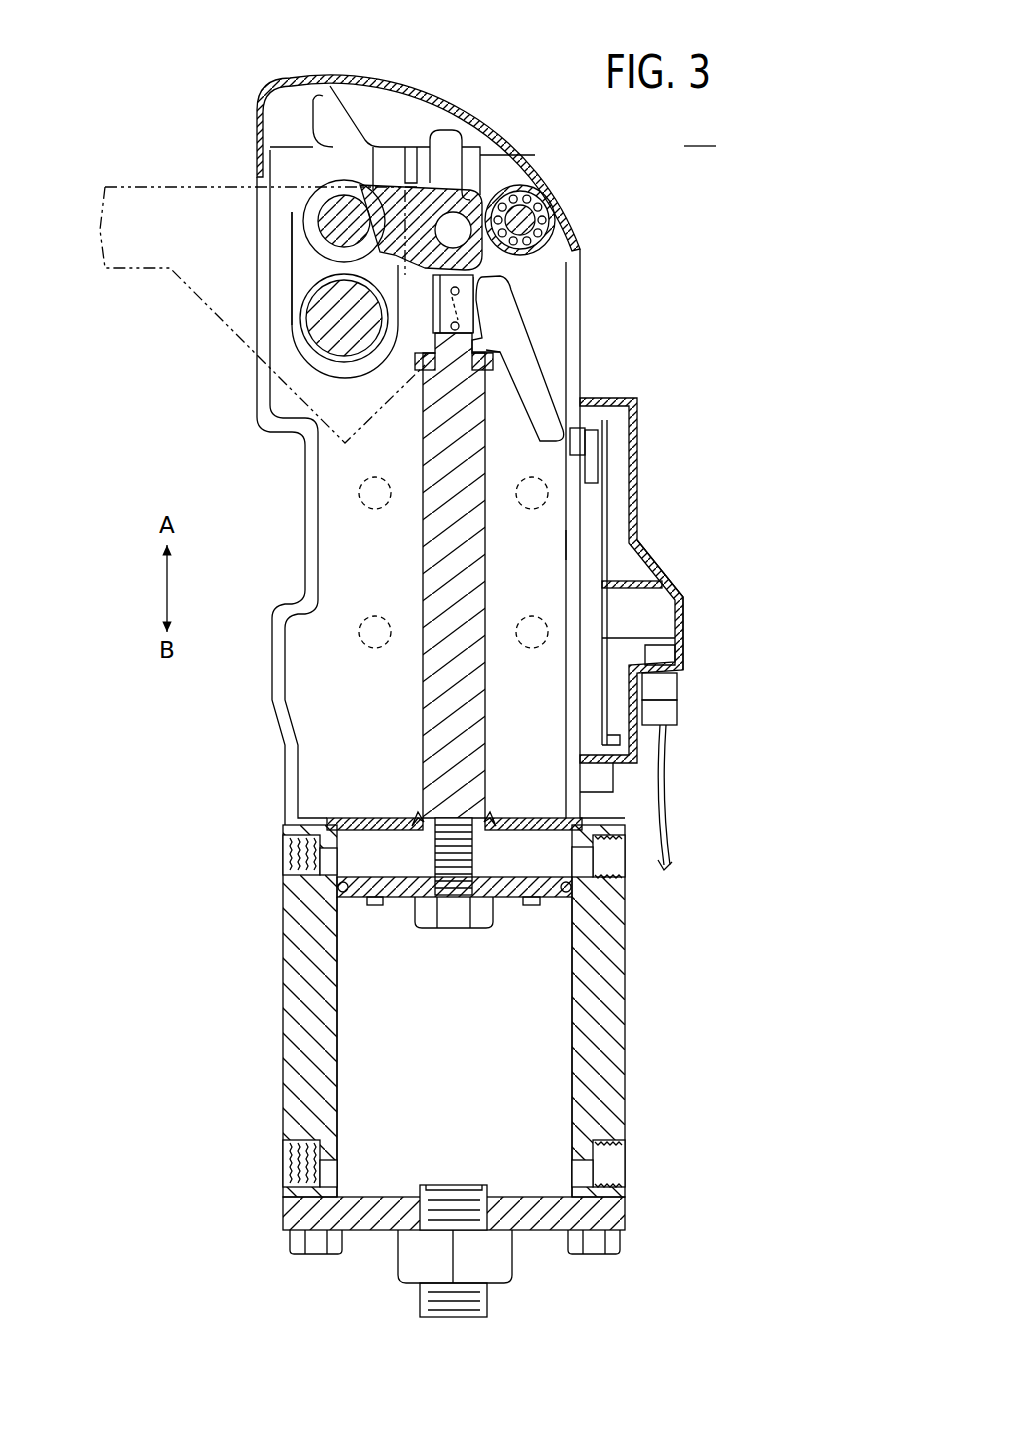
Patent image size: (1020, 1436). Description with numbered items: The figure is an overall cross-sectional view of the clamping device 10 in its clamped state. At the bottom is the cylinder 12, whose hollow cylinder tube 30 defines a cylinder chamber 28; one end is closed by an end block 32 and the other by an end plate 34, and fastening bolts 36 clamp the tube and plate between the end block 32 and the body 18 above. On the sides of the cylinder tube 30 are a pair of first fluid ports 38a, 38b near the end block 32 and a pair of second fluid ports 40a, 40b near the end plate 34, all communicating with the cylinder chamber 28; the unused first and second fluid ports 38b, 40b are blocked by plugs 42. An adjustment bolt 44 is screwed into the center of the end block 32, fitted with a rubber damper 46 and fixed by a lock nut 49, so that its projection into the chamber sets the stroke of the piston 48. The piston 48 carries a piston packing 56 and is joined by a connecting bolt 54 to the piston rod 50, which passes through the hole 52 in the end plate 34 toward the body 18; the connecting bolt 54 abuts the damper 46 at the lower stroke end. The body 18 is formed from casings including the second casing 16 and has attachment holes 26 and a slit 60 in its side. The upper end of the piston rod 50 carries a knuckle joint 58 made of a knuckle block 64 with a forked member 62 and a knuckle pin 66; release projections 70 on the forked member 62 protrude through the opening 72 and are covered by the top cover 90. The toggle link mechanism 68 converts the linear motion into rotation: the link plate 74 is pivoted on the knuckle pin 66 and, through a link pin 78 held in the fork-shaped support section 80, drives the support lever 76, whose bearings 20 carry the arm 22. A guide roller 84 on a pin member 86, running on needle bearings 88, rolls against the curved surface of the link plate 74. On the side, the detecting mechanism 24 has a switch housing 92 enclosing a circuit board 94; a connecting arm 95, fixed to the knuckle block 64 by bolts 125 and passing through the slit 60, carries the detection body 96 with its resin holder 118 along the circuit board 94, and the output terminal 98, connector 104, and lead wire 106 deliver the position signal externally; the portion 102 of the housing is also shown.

The clamping device 10 is at (700, 133).
The cylinder 12 is at (280, 1075).
The second casing 16 is at (301, 516).
The body 18 is at (645, 292).
The bearings 20 is at (345, 342).
The arm 22 is at (165, 215).
The detecting mechanism 24 is at (642, 490).
The attachment holes 26 is at (532, 668).
The cylinder chamber 28 is at (550, 1013).
The cylinder tube 30 is at (618, 950).
The end block 32 is at (300, 1210).
The end plate 34 is at (378, 818).
The fastening bolts 36 is at (316, 1248).
The first fluid port 38a is at (612, 1165).
The first fluid port 38b is at (300, 1150).
The second fluid port 40a is at (608, 862).
The second fluid port 40b is at (320, 842).
The plugs 42 is at (297, 862).
The adjustment bolt 44 is at (487, 1300).
The damper 46 is at (458, 1187).
The piston 48 is at (510, 888).
The lock nut 49 is at (500, 1262).
The piston rod 50 is at (478, 572).
The hole 52 is at (466, 818).
The connecting bolt 54 is at (455, 918).
The piston packing 56 is at (552, 900).
The knuckle joint 58 is at (528, 298).
The slit 60 is at (568, 540).
The forked member 62 is at (428, 285).
The knuckle block 64 is at (417, 375).
The knuckle pin 66 is at (462, 222).
The toggle link mechanism 68 is at (312, 163).
The release projections 70 is at (447, 138).
The opening 72 is at (356, 95).
The link plate 74 is at (408, 240).
The support lever 76 is at (296, 274).
The link pin 78 is at (337, 222).
The support section 80 is at (303, 188).
The guide roller 84 is at (545, 203).
The pin member 86 is at (545, 246).
The needle bearings 88 is at (557, 228).
The top cover 90 is at (440, 118).
The switch housing 92 is at (636, 521).
The circuit board 94 is at (600, 700).
The connecting arm 95 is at (527, 380).
The detection body 96 is at (603, 444).
The output terminal 98 is at (668, 683).
The cover bulge 102 is at (680, 612).
The connector 104 is at (665, 715).
The lead wire 106 is at (672, 835).
The holder 118 is at (592, 461).
The bolts 125 is at (457, 330).